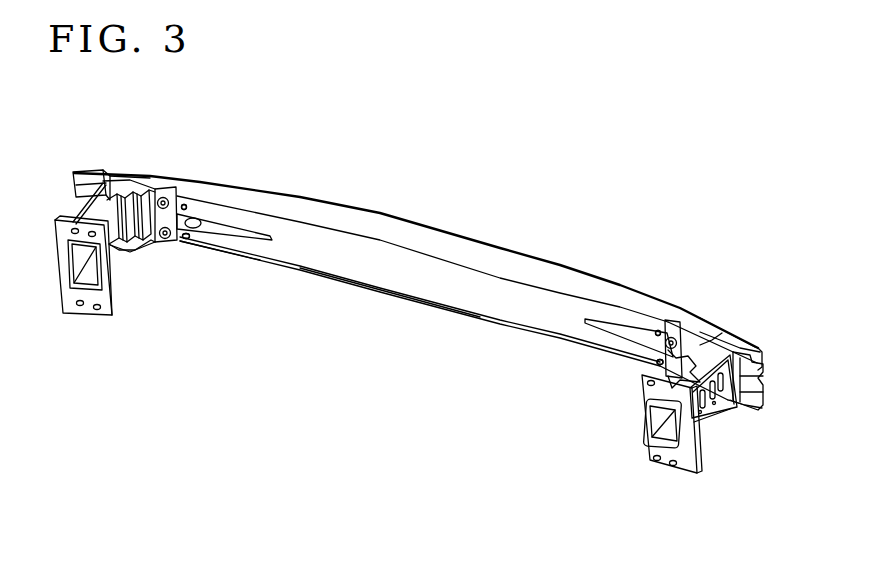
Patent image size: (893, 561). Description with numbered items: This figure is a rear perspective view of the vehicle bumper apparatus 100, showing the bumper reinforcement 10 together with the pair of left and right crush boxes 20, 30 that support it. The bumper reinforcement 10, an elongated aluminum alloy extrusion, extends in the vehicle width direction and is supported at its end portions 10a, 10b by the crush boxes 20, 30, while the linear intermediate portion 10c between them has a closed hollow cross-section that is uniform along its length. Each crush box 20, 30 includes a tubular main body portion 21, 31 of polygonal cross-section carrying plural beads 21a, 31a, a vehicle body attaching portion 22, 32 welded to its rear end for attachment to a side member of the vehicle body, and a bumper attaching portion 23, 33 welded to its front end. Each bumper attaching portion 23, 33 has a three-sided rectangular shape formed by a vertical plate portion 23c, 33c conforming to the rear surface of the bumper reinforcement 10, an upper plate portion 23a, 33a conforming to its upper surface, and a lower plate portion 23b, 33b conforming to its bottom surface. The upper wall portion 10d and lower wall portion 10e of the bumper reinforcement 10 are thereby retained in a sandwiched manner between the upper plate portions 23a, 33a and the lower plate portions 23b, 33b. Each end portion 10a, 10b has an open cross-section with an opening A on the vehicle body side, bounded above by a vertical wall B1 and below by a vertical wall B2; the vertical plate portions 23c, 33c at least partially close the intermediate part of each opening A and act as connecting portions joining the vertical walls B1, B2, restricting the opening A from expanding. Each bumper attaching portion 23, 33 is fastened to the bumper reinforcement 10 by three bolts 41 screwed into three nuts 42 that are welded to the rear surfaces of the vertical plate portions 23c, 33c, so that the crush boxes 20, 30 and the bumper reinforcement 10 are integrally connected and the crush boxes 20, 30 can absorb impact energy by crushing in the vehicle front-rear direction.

The vehicle bumper apparatus 100 is at (380, 197).
The bumper reinforcement 10 is at (440, 228).
The end portion 10a is at (77, 176).
The end portion 10b is at (760, 350).
The intermediate portion 10c is at (408, 298).
The upper wall portion 10d is at (140, 180).
The lower wall portion 10e is at (200, 250).
The crush box 20 is at (91, 235).
The main body portion 21 is at (120, 216).
The bead 21a is at (112, 232).
The vehicle body attaching portion 22 is at (90, 316).
The bumper attaching portion 23 is at (78, 194).
The upper plate portion 23a is at (100, 182).
The lower plate portion 23b is at (142, 250).
The vertical plate portion 23c is at (164, 197).
The crush box 30 is at (706, 352).
The main body portion 31 is at (735, 414).
The bead 31a is at (712, 340).
The vehicle body attaching portion 32 is at (648, 464).
The bumper attaching portion 33 is at (739, 338).
The upper plate portion 33a is at (745, 345).
The lower plate portion 33b is at (742, 420).
The vertical plate portion 33c is at (690, 332).
The bolt 41 is at (186, 204).
The nut 42 is at (165, 197).
The opening A is at (230, 210).
The vertical wall B1 is at (200, 215).
The vertical wall B2 is at (200, 237).